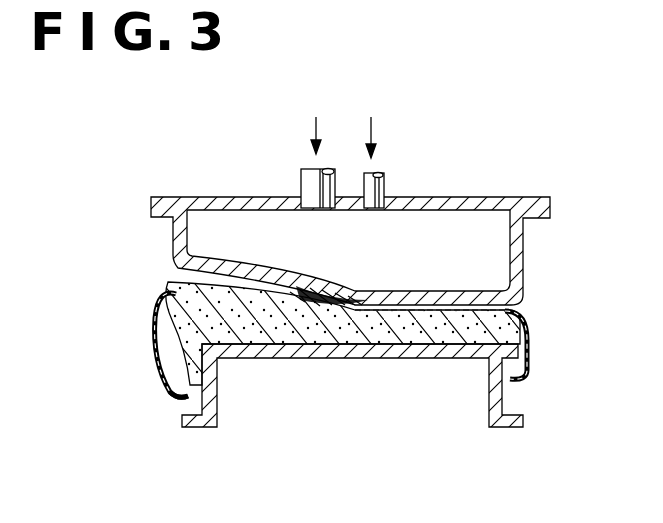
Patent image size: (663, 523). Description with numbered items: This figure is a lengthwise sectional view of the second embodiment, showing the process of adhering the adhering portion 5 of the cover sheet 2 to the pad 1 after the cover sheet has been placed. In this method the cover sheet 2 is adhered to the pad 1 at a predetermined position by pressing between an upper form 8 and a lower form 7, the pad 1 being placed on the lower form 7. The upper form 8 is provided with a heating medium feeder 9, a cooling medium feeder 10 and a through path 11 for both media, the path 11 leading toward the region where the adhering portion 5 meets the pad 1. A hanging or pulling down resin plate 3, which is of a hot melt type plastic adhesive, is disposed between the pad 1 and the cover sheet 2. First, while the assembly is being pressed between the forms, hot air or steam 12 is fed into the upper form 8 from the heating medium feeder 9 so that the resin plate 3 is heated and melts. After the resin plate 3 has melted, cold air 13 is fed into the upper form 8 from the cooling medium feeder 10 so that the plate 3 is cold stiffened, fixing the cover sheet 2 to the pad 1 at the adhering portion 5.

The pad 1 is at (207, 315).
The cover sheet 2 is at (178, 276).
The resin plate 3 is at (352, 368).
The adhering portion 5 is at (302, 300).
The lower form 7 is at (192, 407).
The upper form 8 is at (172, 202).
The heating medium feeder 9 is at (302, 183).
The cooling medium feeder 10 is at (385, 188).
The through path for both media 11 is at (330, 290).
The hot air or steam 12 is at (316, 124).
The cold air 13 is at (372, 123).